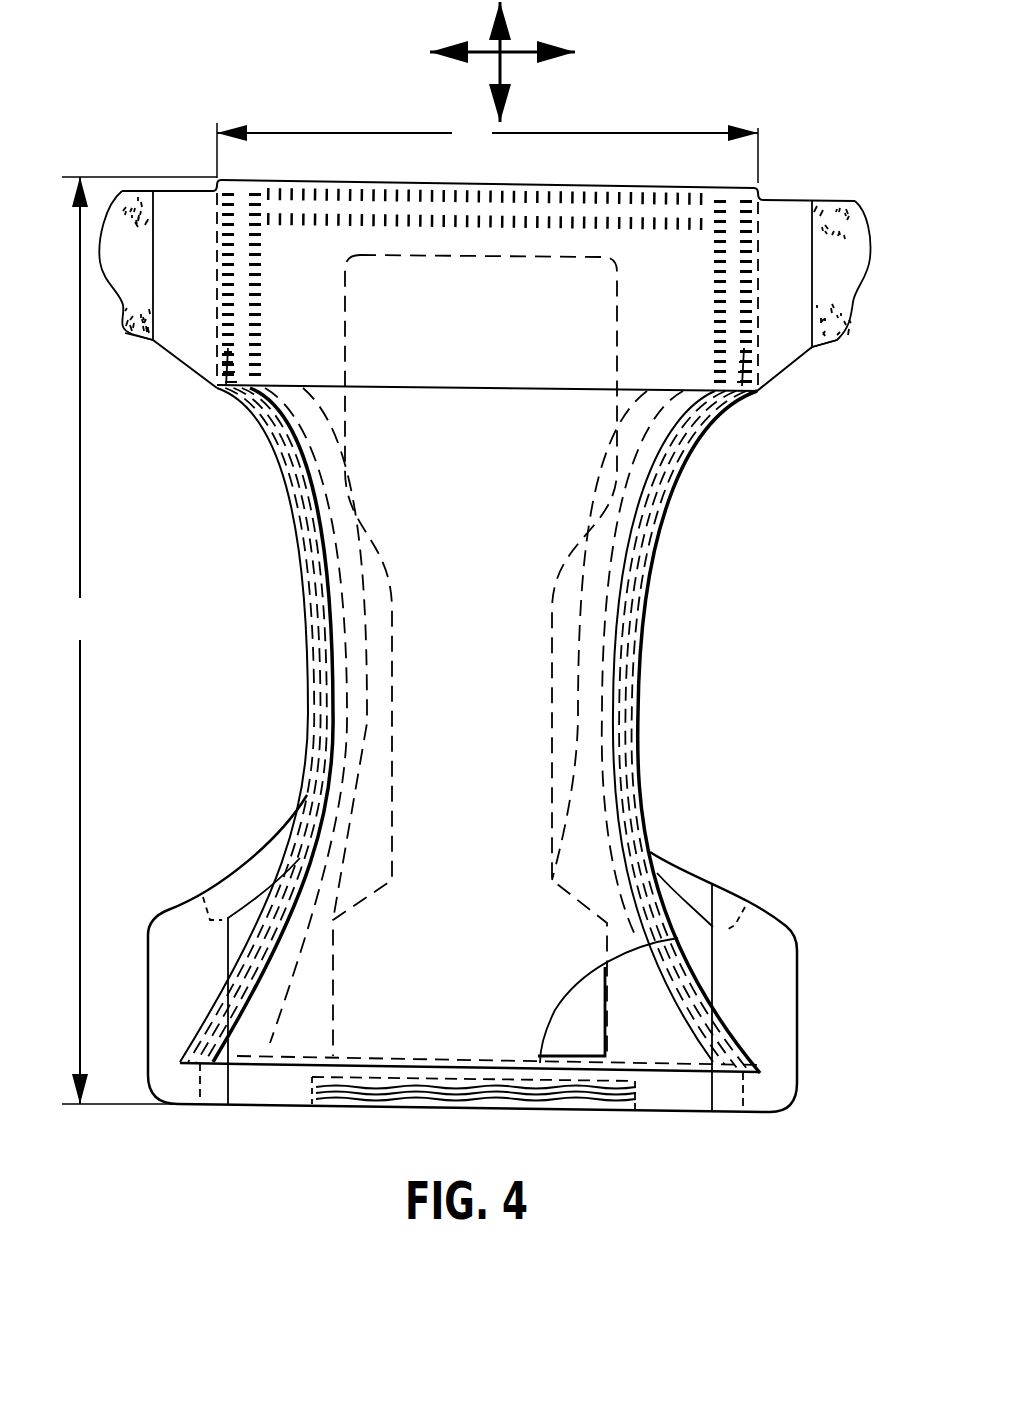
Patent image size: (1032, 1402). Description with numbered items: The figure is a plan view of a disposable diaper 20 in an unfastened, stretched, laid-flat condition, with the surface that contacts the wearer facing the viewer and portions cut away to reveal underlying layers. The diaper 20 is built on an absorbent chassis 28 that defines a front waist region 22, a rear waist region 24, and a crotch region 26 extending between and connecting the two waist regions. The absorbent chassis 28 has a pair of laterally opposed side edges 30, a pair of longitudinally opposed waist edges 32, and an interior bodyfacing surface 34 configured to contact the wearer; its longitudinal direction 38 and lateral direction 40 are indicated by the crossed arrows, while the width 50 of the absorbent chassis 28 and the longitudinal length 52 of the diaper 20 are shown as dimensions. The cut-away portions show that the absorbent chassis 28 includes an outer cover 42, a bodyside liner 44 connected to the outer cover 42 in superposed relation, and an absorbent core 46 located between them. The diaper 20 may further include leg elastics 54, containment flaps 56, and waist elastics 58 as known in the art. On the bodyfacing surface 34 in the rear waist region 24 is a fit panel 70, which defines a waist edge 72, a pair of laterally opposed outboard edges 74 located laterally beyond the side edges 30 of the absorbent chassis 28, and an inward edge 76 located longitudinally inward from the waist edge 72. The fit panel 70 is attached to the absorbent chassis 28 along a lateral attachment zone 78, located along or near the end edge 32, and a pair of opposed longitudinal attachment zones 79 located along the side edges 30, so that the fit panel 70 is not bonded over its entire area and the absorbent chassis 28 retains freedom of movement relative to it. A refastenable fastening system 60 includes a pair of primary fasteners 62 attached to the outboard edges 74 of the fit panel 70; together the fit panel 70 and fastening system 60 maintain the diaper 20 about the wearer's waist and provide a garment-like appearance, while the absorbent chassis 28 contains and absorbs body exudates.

The disposable diaper 20 is at (232, 68).
The front waist region 22 is at (796, 882).
The rear waist region 24 is at (813, 376).
The crotch region 26 is at (754, 622).
The absorbent chassis 28 is at (258, 1045).
The side edges 30 is at (762, 215).
The waist edges 32 is at (362, 184).
The interior bodyfacing surface 34 is at (375, 462).
The longitudinal direction 38 is at (505, 40).
The lateral direction 40 is at (520, 57).
The outer cover 42 is at (688, 960).
The bodyside liner 44 is at (555, 1005).
The absorbent core 46 is at (608, 1042).
The width of the absorbent chassis 50 is at (487, 152).
The longitudinal length of the diaper 52 is at (139, 640).
The leg elastics 54 is at (258, 887).
The containment flaps 56 is at (653, 863).
The waist elastics 58 is at (485, 1097).
The refastenable fastening system 60 is at (139, 353).
The primary fasteners 62 is at (128, 190).
The fit panel 70 is at (534, 365).
The waist edge of the fit panel 72 is at (657, 186).
The outboard edges 74 is at (848, 313).
The inward edge 76 is at (447, 392).
The lateral attachment zone 78 is at (513, 196).
The longitudinal attachment zones 79 is at (218, 388).